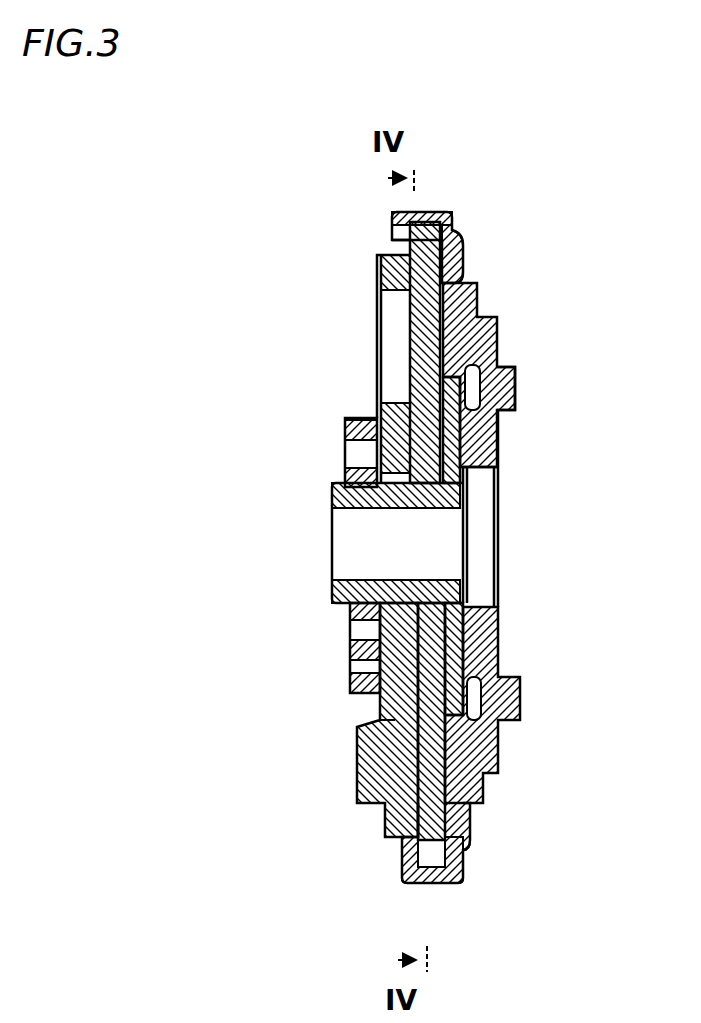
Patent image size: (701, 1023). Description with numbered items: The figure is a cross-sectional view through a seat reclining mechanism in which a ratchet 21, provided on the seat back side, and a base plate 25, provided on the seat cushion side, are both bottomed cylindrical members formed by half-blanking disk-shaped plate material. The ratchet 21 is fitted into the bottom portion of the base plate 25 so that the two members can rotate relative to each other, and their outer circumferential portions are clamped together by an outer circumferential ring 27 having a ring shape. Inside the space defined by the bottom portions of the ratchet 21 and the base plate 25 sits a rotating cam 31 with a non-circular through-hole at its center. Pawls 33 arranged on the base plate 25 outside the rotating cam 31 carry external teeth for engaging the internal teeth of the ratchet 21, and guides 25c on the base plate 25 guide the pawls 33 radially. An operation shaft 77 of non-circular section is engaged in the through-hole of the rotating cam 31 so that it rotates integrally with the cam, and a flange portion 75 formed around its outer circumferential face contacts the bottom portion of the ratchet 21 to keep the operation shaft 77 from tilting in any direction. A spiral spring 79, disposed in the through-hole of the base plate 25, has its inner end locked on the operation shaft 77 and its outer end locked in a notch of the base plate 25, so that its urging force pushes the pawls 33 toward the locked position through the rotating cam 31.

The ratchet 21 is at (480, 657).
The base plate 25 is at (377, 270).
The guides 25c is at (493, 320).
The outer circumferential ring 27 is at (445, 213).
The rotating cam 31 is at (460, 607).
The pawls 33 is at (473, 757).
The flange portion 75 is at (495, 432).
The operation shaft 77 is at (337, 583).
The spiral spring 79 is at (345, 420).